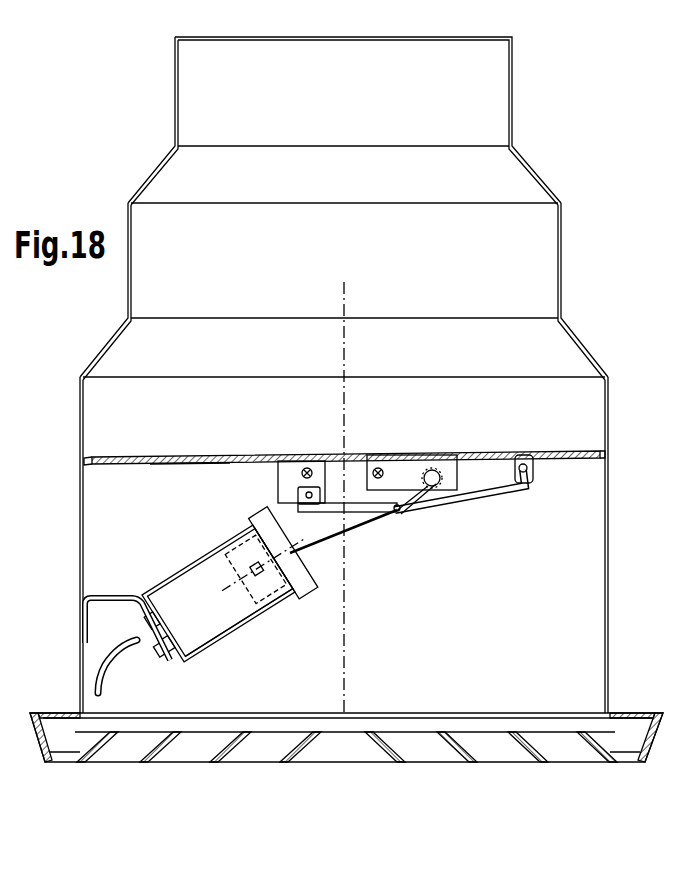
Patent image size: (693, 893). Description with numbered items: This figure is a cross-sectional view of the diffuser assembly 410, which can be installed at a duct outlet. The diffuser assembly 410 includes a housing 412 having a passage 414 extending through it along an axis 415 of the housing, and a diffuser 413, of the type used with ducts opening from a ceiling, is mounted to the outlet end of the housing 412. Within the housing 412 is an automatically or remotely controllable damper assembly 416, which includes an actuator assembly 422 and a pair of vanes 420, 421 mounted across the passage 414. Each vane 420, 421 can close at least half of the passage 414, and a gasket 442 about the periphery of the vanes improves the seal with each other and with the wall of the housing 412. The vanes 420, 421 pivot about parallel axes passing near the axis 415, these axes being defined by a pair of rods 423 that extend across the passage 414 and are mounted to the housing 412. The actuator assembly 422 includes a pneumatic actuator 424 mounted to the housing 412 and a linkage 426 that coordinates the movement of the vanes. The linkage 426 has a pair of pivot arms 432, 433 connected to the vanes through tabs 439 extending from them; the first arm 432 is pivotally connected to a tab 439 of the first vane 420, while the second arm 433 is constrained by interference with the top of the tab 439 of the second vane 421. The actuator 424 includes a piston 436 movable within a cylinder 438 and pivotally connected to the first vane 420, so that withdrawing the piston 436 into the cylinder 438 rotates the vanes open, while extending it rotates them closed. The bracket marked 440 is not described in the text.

The diffuser assembly 410 is at (310, 375).
The housing 412 is at (104, 346).
The diffuser 413 is at (35, 748).
The passage 414 is at (225, 230).
The axis 415 is at (348, 288).
The damper assembly 416 is at (310, 545).
The first vane 420 is at (343, 429).
The second vane 421 is at (187, 460).
The actuator assembly 422 is at (200, 513).
The rods 423 is at (307, 468).
The pneumatic actuator 424 is at (262, 605).
The linkage 426 is at (463, 521).
The first pivot arm 432 is at (465, 495).
The second pivot arm 433 is at (335, 505).
The piston 436 is at (332, 560).
The cylinder 438 is at (200, 648).
The tabs 439 is at (338, 452).
The support bracket 440 is at (108, 598).
The gasket 442 is at (92, 461).